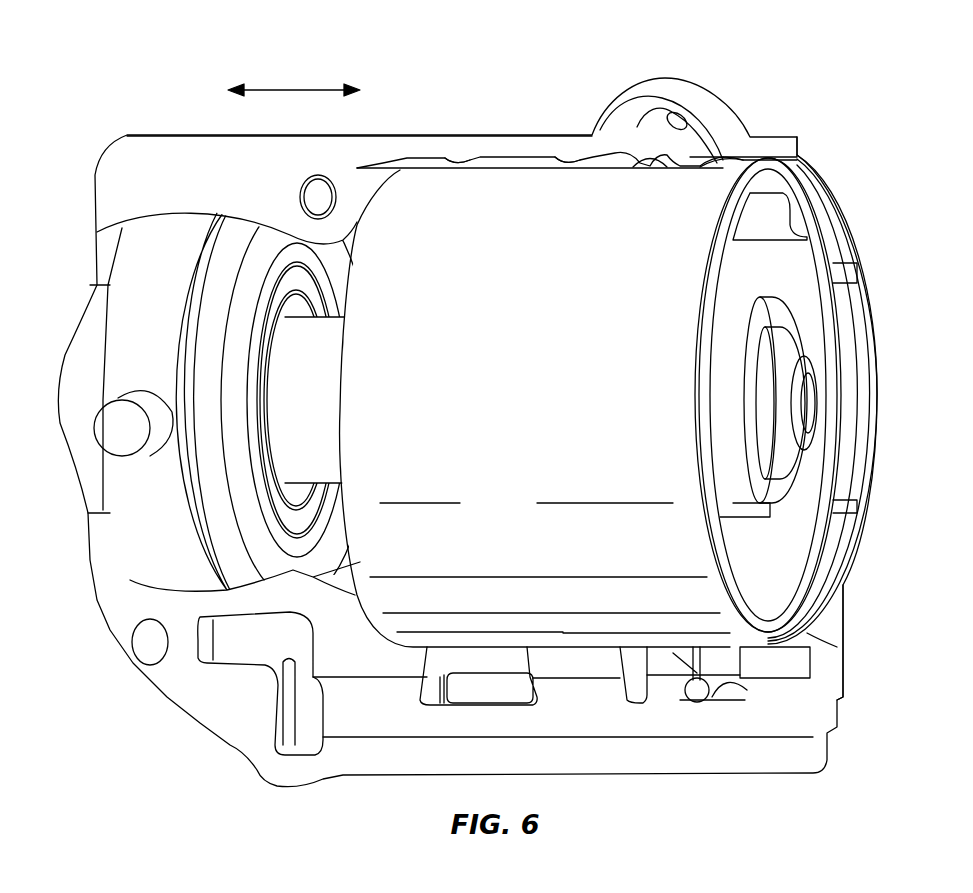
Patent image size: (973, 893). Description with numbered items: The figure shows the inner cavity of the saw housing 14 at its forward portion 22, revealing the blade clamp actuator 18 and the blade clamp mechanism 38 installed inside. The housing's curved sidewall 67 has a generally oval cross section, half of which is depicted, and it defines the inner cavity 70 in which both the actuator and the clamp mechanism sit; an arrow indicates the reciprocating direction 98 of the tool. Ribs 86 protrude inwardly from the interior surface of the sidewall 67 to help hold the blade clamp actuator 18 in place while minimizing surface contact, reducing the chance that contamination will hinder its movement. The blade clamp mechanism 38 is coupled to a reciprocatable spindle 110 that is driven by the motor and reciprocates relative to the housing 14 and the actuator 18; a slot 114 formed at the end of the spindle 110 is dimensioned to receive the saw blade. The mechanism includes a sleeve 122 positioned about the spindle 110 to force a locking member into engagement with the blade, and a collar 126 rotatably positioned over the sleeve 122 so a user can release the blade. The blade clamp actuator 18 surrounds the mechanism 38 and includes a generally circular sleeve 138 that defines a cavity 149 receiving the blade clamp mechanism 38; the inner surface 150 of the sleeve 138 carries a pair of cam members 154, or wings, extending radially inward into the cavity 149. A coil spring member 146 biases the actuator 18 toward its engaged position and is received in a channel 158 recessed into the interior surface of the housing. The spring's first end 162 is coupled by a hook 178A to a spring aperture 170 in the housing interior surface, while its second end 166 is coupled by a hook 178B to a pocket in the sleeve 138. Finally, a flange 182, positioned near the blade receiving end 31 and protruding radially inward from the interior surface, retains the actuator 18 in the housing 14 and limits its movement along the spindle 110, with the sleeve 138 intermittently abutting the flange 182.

The saw housing 14 is at (165, 135).
The curved sidewall 67 is at (218, 135).
The reciprocating direction 98 is at (298, 88).
The blade clamp actuator 18 is at (420, 210).
The ribs 86 is at (463, 163).
The sleeve 138 is at (530, 218).
The hook 178B is at (677, 177).
The channel 158 is at (684, 126).
The second end 166 is at (677, 163).
The spring member 146 is at (632, 165).
The forward portion 22 is at (795, 136).
The cam members 154 is at (793, 228).
The inner cavity 70 is at (827, 231).
The inner surface 150 is at (800, 287).
The slot 114 is at (808, 378).
The flange 182 is at (858, 412).
The blade clamp mechanism 38 is at (818, 432).
The blade receiving end 31 is at (860, 527).
The spindle 110 is at (783, 477).
The sleeve 122 is at (777, 550).
The cavity 149 is at (733, 550).
The collar 126 is at (790, 595).
The hook 178A is at (685, 655).
The first end 162 is at (690, 705).
The spring aperture 170 is at (713, 680).